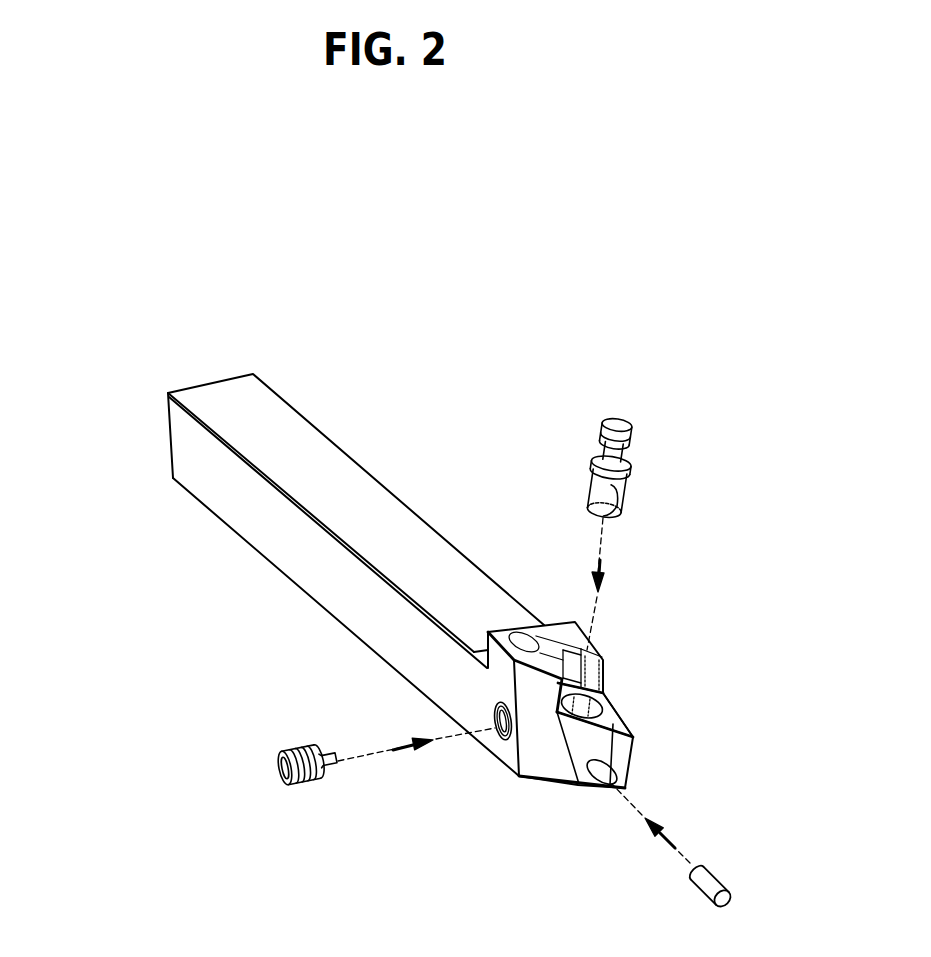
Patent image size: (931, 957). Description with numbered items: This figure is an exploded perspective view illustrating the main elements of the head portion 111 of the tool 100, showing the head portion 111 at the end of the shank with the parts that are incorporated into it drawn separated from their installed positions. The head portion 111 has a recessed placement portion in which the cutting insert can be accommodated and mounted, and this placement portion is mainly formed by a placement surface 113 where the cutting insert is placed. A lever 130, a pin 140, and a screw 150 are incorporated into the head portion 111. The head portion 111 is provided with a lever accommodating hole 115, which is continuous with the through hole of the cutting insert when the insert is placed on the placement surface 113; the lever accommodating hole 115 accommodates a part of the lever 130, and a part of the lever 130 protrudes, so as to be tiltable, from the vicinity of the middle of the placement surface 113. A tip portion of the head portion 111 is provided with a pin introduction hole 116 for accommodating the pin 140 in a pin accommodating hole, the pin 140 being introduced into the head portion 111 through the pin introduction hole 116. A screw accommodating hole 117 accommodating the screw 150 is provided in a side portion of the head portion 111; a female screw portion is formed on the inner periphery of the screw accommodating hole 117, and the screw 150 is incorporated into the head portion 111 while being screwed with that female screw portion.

The cutting tool 100 is at (107, 264).
The head portion 111 is at (688, 635).
The placement surface 113 is at (613, 714).
The lever accommodating hole 115 is at (594, 700).
The pin introduction hole 116 is at (607, 787).
The screw accommodating hole 117 is at (499, 733).
The lever 130 is at (627, 481).
The pin 140 is at (713, 877).
The screw 150 is at (300, 785).